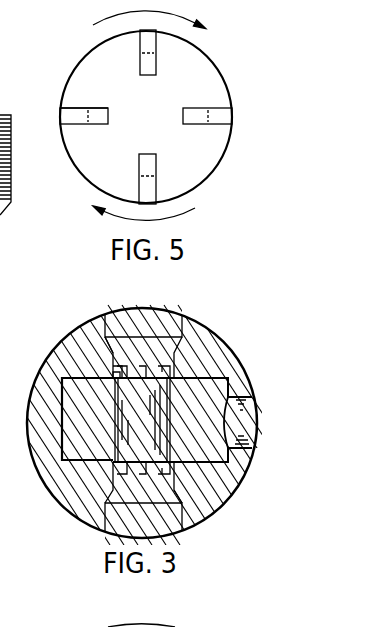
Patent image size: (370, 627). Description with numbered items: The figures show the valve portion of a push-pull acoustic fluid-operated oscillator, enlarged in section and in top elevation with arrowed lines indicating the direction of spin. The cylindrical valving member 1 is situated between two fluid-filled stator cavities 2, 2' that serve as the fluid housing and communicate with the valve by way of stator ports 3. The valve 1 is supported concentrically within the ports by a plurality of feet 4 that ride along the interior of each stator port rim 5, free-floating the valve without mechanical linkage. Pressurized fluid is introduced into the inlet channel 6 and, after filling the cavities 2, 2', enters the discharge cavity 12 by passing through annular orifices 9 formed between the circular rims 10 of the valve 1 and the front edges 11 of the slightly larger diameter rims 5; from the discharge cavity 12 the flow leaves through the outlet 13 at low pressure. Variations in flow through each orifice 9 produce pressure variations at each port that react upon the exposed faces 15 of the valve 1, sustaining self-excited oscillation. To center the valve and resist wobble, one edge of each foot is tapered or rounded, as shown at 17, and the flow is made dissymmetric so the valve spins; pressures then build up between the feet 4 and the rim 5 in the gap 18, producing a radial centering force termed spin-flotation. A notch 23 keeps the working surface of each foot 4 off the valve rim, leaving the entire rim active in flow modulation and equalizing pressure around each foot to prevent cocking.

In FIG. 5, the valving member 1 is at (208, 152).
In FIG. 3, the valving member 1 is at (138, 417).
In FIG. 3, the stator cavity 2 is at (143, 324).
In FIG. 3, the stator cavity 2' is at (143, 519).
In FIG. 3, the stator port 3 is at (151, 363).
In FIG. 5, the feet 4 is at (82, 108).
In FIG. 3, the feet 4 is at (163, 377).
In FIG. 3, the stator port rim 5 is at (165, 490).
In FIG. 3, the inlet channel 6 is at (32, 427).
In FIG. 3, the annular orifice 9 is at (172, 380).
In FIG. 3, the circular rim 10 is at (178, 420).
In FIG. 3, the front edge 11 is at (101, 460).
In FIG. 3, the discharge cavity 12 is at (170, 420).
In FIG. 3, the outlet 13 is at (238, 422).
In FIG. 3, the exposed faces 15 is at (152, 381).
In FIG. 5, the tapered edge 17 is at (63, 107).
In FIG. 3, the gap 18 is at (113, 366).
In FIG. 3, the notch 23 is at (114, 379).